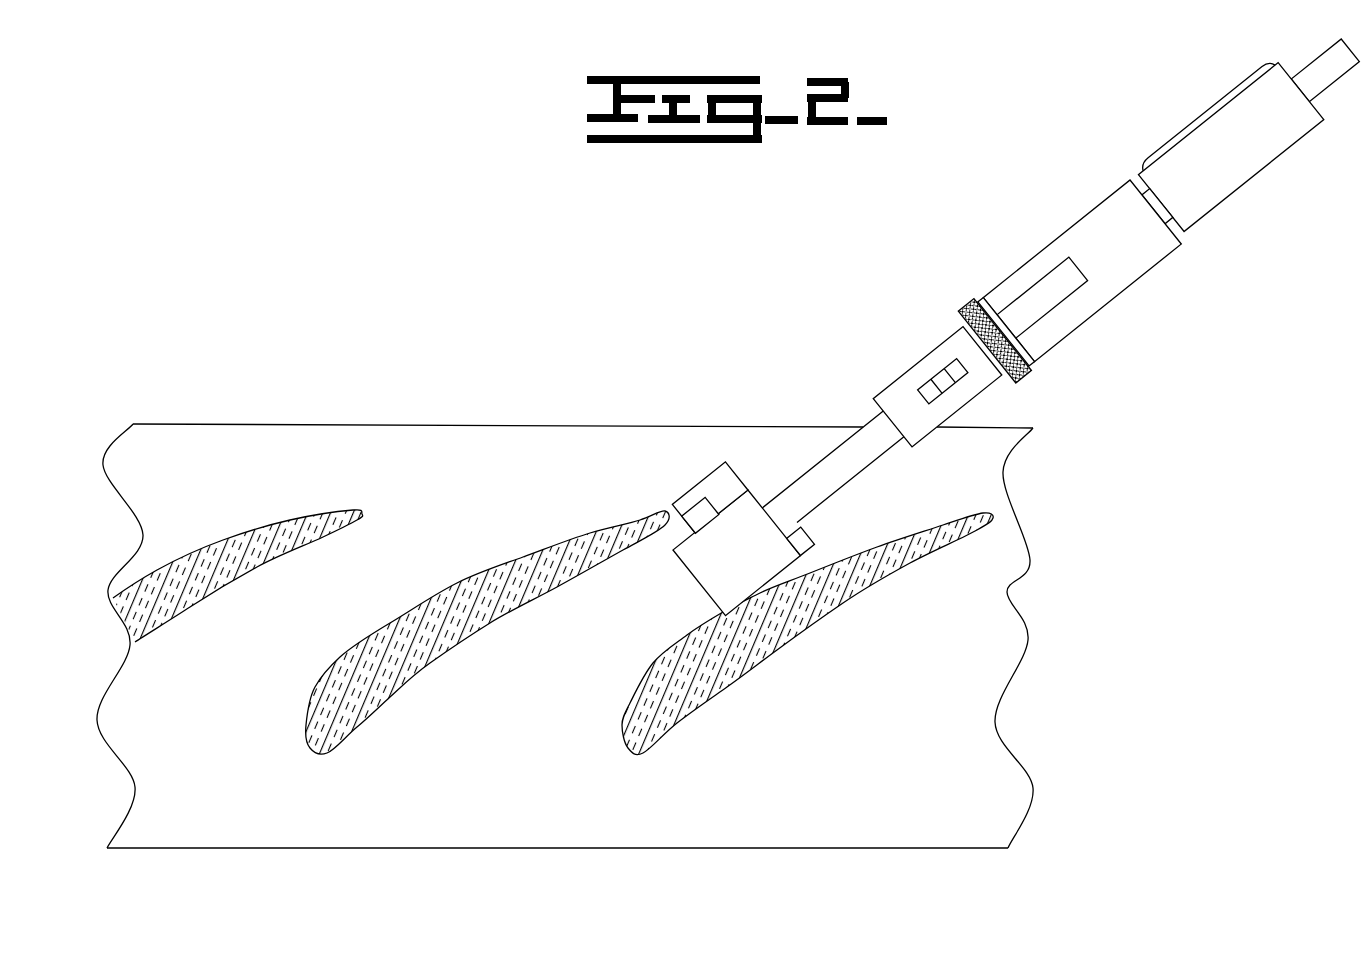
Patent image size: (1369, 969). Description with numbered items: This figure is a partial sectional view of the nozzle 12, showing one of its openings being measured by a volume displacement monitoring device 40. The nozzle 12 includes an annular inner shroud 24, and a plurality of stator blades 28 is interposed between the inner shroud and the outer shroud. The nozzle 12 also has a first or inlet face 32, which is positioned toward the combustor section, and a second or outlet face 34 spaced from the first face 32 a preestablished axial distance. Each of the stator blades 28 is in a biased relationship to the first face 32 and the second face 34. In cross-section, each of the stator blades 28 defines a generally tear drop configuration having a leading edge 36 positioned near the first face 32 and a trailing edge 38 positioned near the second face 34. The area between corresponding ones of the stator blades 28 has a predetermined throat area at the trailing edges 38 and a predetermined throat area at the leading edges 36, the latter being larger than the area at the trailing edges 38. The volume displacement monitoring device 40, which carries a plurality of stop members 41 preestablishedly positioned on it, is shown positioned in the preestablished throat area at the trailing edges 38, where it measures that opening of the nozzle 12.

The nozzle 12 is at (340, 427).
The annular inner shroud 24 is at (553, 849).
The stator blades 28 is at (640, 683).
The first or inlet face 32 is at (367, 849).
The second or outlet face 34 is at (600, 427).
The leading edge 36 is at (645, 756).
The trailing edge 38 is at (365, 510).
The volume displacement monitoring device 40 is at (1047, 246).
The stop members 41 is at (738, 468).